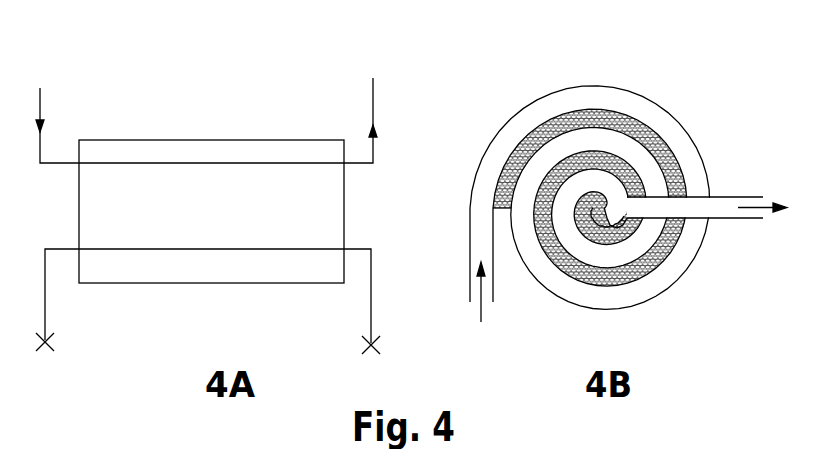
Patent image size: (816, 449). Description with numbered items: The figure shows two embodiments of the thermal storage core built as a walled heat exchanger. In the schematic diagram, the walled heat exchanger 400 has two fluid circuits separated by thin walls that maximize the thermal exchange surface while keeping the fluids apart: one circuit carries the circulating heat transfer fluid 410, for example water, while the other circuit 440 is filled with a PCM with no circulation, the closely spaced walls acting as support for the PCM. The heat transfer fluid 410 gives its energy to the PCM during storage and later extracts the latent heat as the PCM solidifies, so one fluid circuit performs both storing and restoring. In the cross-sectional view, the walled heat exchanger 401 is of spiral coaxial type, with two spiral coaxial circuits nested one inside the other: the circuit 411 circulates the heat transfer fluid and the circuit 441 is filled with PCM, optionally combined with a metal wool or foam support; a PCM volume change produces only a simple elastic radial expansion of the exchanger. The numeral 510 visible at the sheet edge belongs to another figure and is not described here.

In FIG. 4A, the walled heat exchanger 400 is at (230, 140).
In FIG. 4A, the heat transfer fluid 410 is at (40, 110).
In FIG. 4A, the other circuit 440 is at (60, 249).
In FIG. 4B, the spiral coaxial walled heat exchanger 401 is at (607, 170).
In FIG. 4B, the spiral coaxial circuit for heat transfer fluid 411 is at (482, 230).
In FIG. 4B, the spiral coaxial circuit filled with PCM 441 is at (672, 145).
In FIG. 4A, the reference numeral of adjacent figure 510 is at (285, 448).